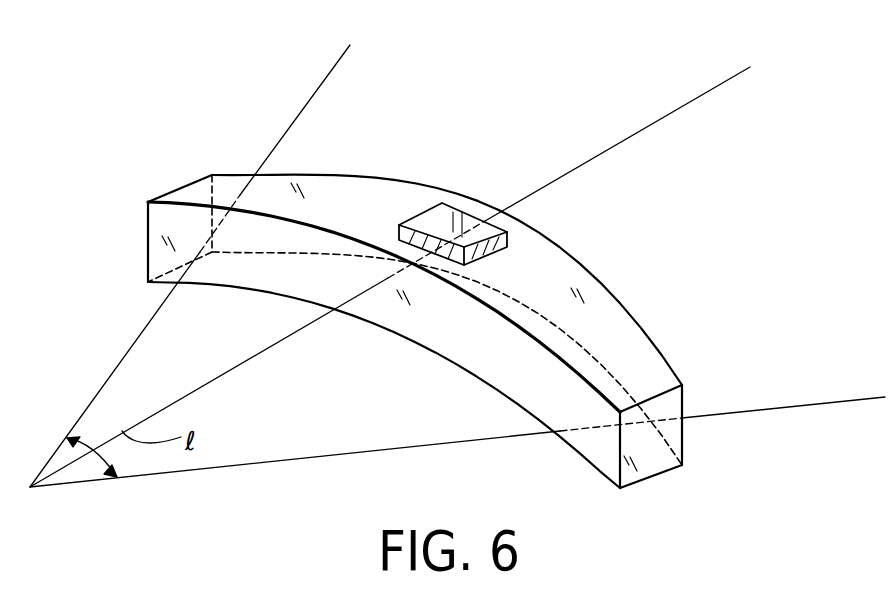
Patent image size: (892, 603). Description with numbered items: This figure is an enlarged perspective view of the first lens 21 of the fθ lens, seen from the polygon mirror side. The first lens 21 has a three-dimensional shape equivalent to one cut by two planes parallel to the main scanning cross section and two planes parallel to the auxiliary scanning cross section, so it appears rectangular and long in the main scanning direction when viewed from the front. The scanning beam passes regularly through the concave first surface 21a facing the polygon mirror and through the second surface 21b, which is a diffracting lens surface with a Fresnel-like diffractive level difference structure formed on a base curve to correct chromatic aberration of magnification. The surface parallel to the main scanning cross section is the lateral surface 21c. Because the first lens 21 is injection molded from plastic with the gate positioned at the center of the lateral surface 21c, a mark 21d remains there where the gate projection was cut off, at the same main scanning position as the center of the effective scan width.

The first lens 21 is at (657, 453).
The first surface 21a is at (504, 372).
The second surface 21b is at (609, 327).
The lateral surface 21c is at (325, 188).
The mark 21d is at (468, 222).